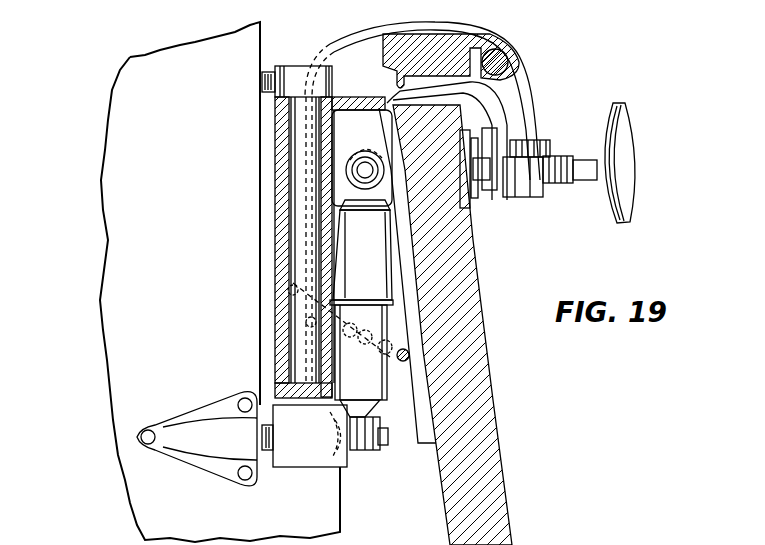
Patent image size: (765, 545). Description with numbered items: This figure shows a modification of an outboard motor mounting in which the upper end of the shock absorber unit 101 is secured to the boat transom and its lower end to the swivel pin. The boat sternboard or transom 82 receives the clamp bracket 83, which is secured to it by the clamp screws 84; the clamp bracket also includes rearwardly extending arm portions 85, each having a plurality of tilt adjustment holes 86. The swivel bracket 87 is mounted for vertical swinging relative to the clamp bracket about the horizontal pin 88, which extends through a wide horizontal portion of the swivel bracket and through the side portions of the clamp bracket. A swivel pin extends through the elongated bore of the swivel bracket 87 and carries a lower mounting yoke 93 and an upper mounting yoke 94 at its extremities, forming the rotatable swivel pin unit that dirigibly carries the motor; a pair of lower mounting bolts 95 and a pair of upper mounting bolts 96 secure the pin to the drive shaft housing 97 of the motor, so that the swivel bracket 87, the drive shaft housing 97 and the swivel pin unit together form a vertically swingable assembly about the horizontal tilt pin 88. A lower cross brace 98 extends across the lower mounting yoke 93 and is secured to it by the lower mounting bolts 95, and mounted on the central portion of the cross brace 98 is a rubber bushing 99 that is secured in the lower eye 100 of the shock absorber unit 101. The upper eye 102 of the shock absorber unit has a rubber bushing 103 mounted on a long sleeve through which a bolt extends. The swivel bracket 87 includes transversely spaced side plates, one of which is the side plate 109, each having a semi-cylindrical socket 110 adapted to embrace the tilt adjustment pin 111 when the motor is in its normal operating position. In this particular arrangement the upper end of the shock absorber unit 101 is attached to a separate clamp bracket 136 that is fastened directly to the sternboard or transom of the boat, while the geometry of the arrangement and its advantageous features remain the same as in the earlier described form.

The boat transom 82 is at (473, 267).
The clamp bracket 83 is at (535, 90).
The clamp screws 84 is at (588, 170).
The arm portions 85 is at (310, 327).
The tilt adjustment holes 86 is at (290, 290).
The swivel bracket 87 is at (465, 38).
The horizontal pin 88 is at (508, 62).
The lower mounting yoke 93 is at (310, 458).
The upper mounting yoke 94 is at (303, 68).
The lower mounting bolts 95 is at (258, 440).
The upper mounting bolts 96 is at (263, 84).
The drive shaft housing 97 is at (108, 334).
The lower cross brace 98 is at (353, 448).
The rubber bushing 99 is at (362, 425).
The lower eye 100 is at (330, 447).
The shock absorber unit 101 is at (395, 300).
The upper eye 102 is at (359, 157).
The rubber bushing 103 is at (358, 211).
The side plate 109 is at (380, 340).
The semi-cylindrical socket 110 is at (398, 360).
The tilt adjustment pin 111 is at (410, 354).
The separate clamp bracket 136 is at (520, 165).